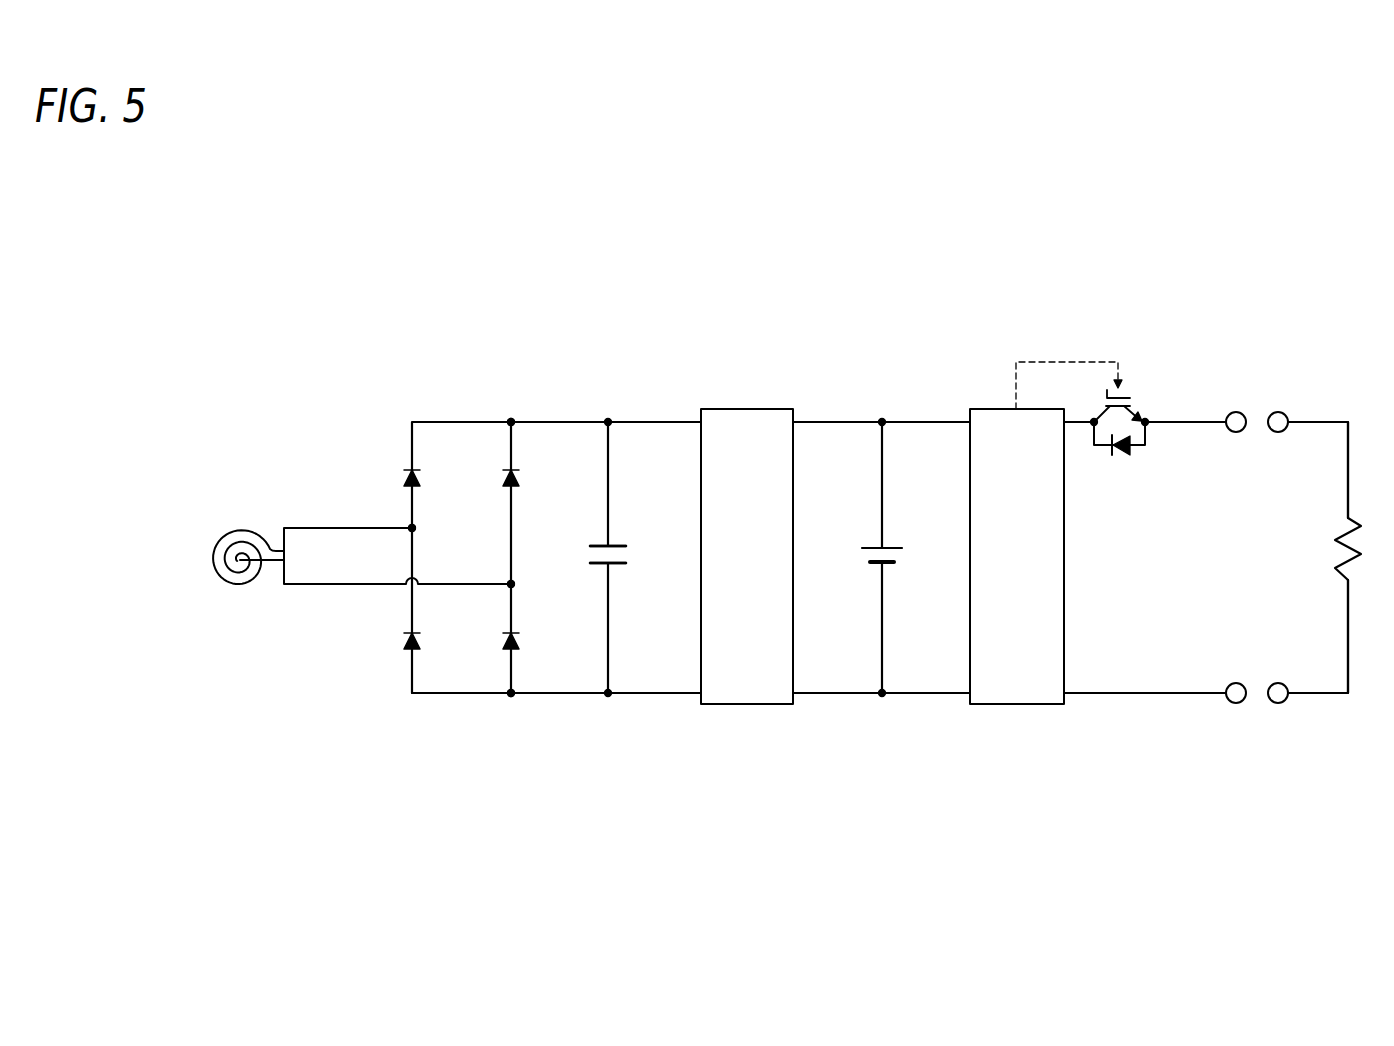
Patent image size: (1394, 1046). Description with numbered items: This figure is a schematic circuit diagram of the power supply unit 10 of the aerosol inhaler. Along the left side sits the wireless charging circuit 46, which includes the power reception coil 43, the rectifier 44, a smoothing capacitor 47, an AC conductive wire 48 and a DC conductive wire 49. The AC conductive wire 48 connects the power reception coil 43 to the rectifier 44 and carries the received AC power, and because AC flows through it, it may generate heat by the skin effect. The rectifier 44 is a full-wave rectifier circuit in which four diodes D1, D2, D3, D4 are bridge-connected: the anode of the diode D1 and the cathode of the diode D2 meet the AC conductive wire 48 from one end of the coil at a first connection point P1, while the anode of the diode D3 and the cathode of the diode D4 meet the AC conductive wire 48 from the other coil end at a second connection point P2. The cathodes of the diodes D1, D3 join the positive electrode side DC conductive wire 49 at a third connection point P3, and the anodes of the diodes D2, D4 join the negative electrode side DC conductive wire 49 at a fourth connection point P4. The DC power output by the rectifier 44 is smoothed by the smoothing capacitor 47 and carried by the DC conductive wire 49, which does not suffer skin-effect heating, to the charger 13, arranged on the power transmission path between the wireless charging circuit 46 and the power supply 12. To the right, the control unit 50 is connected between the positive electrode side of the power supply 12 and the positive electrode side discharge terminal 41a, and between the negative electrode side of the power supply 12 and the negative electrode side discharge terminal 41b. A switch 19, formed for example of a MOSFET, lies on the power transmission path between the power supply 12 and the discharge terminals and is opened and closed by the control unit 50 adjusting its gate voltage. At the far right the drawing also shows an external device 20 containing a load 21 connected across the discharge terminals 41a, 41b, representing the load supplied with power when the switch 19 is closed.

The power supply unit 10 is at (1218, 253).
The power supply 12 is at (869, 508).
The charger 13 is at (743, 408).
The switch 19 is at (1165, 394).
The external load device 20 is at (1309, 459).
The load resistor 21 is at (1312, 524).
The positive electrode side discharge terminal 41a is at (1244, 412).
The negative electrode side discharge terminal 41b is at (1243, 702).
The power reception coil 43 is at (238, 594).
The rectifier 44 is at (488, 577).
The wireless charging circuit 46 is at (401, 767).
The smoothing capacitor 47 is at (631, 600).
The AC conductive wire 48 is at (327, 527).
The DC conductive wire 49 is at (640, 420).
The control unit 50 is at (1065, 512).
The diode D1 is at (433, 479).
The diode D2 is at (433, 644).
The diode D3 is at (532, 479).
The diode D4 is at (532, 644).
The first connection point P1 is at (416, 528).
The second connection point P2 is at (514, 583).
The third connection point P3 is at (511, 419).
The fourth connection point P4 is at (512, 696).